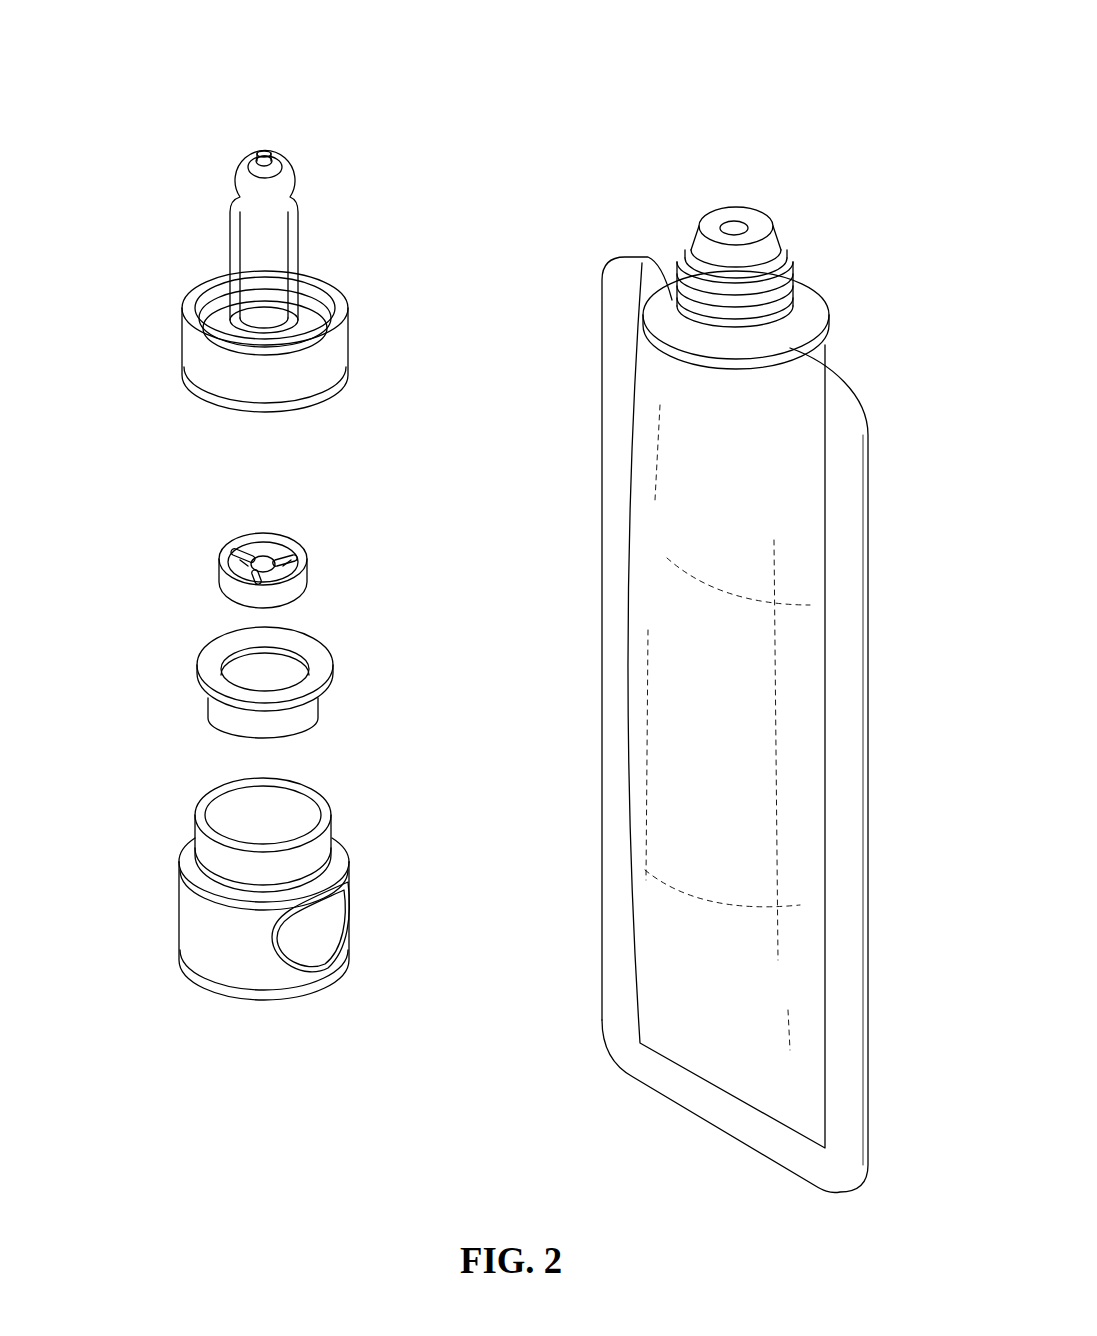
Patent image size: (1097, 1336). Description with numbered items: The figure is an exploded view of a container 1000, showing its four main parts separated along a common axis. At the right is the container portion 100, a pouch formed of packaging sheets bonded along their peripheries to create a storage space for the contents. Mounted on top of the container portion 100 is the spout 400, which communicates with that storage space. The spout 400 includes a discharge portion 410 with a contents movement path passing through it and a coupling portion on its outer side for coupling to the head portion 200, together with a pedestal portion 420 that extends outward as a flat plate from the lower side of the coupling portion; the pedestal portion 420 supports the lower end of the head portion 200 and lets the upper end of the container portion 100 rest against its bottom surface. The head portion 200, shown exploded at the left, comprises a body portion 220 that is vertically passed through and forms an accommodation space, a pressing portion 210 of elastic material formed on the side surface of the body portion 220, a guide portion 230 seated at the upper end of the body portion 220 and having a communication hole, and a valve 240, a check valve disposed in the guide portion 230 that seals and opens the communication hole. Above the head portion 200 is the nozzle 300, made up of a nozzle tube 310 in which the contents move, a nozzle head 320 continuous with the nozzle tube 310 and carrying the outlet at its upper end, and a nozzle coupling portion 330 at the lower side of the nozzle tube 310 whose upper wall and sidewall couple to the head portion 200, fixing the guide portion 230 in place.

The container 1000 is at (910, 25).
The container portion 100 is at (602, 571).
The head portion 200 is at (128, 558).
The pressing portion 210 is at (322, 940).
The body portion 220 is at (195, 916).
The guide portion 230 is at (318, 710).
The valve 240 is at (306, 570).
The nozzle 300 is at (168, 249).
The nozzle tube 310 is at (300, 232).
The nozzle head 320 is at (302, 168).
The nozzle coupling portion 330 is at (350, 343).
The spout 400 is at (690, 228).
The discharge portion 410 is at (772, 228).
The pedestal portion 420 is at (828, 315).